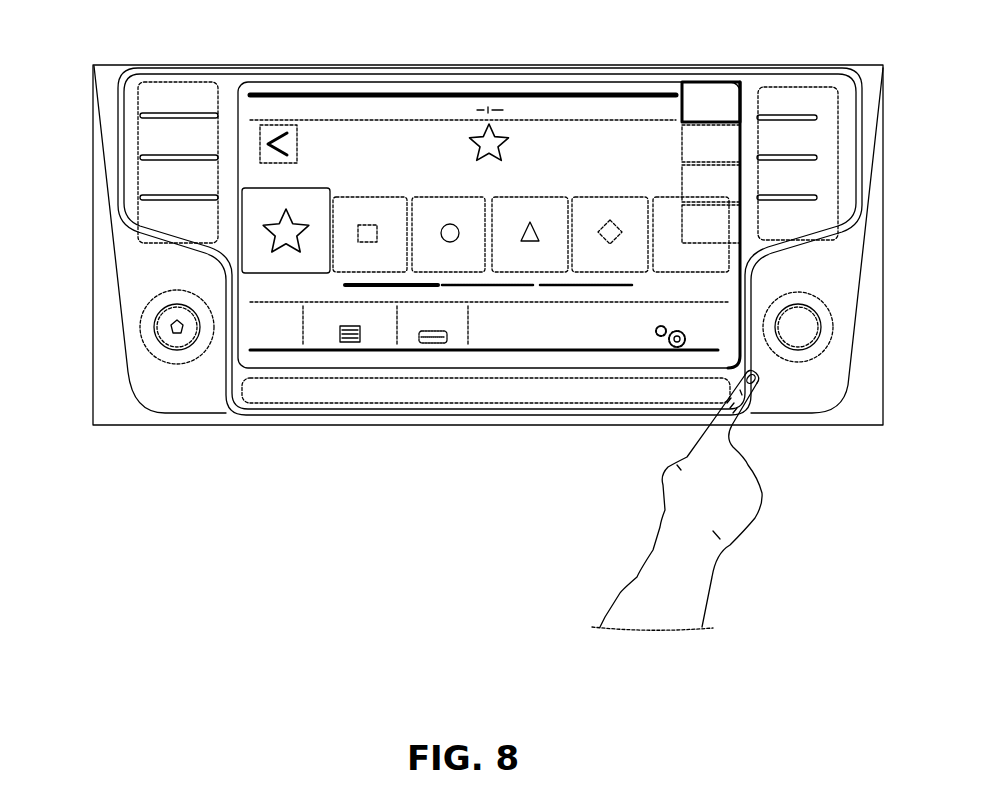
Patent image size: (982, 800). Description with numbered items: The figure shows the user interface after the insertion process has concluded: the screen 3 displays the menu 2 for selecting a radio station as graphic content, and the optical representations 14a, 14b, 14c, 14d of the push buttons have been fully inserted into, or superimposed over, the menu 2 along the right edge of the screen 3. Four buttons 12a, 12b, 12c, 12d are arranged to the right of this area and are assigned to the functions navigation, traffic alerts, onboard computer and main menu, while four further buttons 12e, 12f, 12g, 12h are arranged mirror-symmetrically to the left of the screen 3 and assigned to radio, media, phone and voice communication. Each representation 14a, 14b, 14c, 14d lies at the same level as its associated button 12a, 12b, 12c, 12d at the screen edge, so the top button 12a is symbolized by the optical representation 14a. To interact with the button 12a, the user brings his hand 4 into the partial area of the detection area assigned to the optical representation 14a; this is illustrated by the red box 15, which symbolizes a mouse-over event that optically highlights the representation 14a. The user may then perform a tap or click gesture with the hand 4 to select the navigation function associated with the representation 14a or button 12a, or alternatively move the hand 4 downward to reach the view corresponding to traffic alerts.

The menu 2 is at (402, 143).
The screen 3 is at (277, 64).
The hand 4 is at (740, 500).
The button 12a is at (827, 98).
The button 12b is at (827, 128).
The button 12c is at (827, 167).
The button 12d is at (827, 210).
The further button 12e is at (150, 87).
The further button 12f is at (150, 127).
The further button 12g is at (150, 167).
The further button 12h is at (150, 203).
The optical representation 14a is at (733, 100).
The optical representation 14b is at (735, 126).
The optical representation 14c is at (735, 193).
The optical representation 14d is at (735, 237).
The red box 15 is at (692, 70).